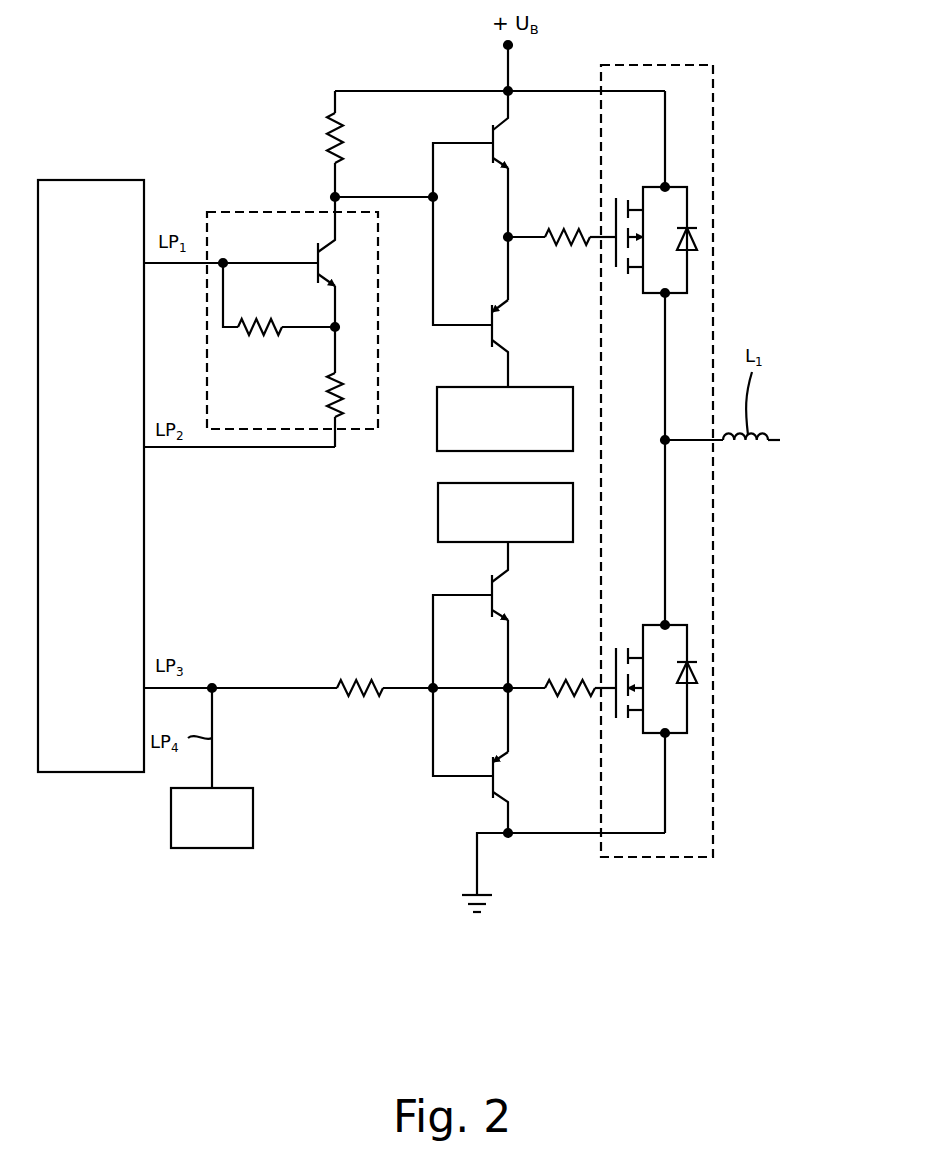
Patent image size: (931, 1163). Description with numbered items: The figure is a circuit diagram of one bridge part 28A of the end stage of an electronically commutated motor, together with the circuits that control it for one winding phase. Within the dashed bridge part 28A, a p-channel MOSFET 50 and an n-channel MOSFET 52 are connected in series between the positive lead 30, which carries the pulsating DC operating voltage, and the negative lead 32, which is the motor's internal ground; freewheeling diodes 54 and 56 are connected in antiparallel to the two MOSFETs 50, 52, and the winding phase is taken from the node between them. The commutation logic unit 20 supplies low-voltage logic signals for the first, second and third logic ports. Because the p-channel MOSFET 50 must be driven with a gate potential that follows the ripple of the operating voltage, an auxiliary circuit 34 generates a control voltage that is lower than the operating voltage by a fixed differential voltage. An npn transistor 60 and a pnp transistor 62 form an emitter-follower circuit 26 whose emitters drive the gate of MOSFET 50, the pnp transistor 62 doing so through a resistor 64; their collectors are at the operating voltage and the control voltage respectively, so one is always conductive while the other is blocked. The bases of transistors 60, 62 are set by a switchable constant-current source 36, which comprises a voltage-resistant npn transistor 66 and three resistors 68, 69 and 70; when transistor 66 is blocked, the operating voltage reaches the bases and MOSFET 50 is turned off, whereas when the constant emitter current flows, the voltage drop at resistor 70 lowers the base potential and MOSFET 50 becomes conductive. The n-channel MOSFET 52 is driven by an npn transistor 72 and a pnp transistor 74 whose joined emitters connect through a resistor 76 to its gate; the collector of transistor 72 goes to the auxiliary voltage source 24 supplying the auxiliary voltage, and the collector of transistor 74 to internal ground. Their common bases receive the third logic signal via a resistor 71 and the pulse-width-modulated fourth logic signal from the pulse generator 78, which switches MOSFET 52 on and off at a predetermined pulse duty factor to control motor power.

The commutation logic unit COM 20 is at (78, 180).
The auxiliary voltage source 24 is at (448, 510).
The circuit 26 is at (485, 230).
The part of end stage 28A is at (697, 835).
The positive lead 30 is at (400, 91).
The negative lead 32 is at (580, 835).
The auxiliary circuit 34 is at (448, 422).
The switchable constant-current source 36 is at (236, 212).
The p-channel MOSFET 50 is at (616, 208).
The n-channel MOSFET 52 is at (620, 645).
The freewheeling diode 54 is at (697, 240).
The freewheeling diode 56 is at (698, 672).
The npn transistor 60 is at (515, 138).
The pnp transistor 62 is at (497, 327).
The resistor 64 is at (570, 235).
The voltage-resistant npn transistor 66 is at (322, 268).
The resistor 68 is at (272, 335).
The resistor 69 is at (330, 395).
The resistor 70 is at (347, 135).
The resistor 71 is at (365, 680).
The npn transistor 72 is at (497, 590).
The pnp transistor 74 is at (497, 773).
The resistor 76 is at (567, 682).
The PWM generator 78 is at (253, 818).